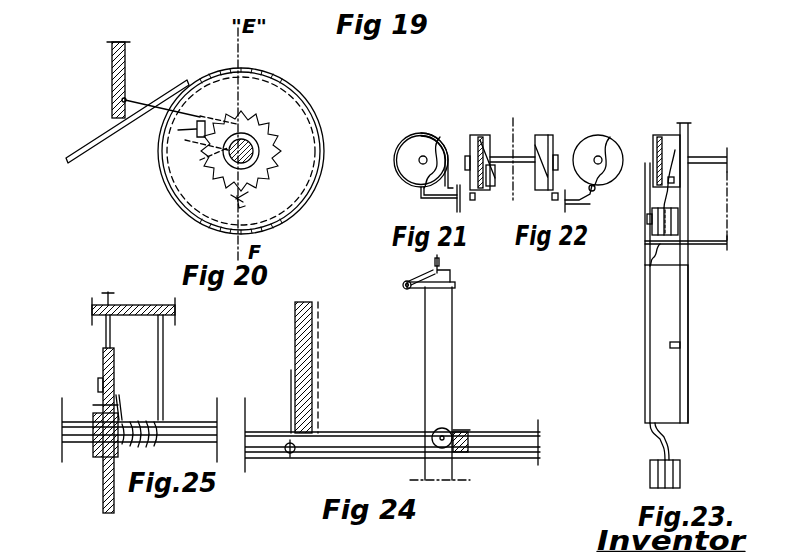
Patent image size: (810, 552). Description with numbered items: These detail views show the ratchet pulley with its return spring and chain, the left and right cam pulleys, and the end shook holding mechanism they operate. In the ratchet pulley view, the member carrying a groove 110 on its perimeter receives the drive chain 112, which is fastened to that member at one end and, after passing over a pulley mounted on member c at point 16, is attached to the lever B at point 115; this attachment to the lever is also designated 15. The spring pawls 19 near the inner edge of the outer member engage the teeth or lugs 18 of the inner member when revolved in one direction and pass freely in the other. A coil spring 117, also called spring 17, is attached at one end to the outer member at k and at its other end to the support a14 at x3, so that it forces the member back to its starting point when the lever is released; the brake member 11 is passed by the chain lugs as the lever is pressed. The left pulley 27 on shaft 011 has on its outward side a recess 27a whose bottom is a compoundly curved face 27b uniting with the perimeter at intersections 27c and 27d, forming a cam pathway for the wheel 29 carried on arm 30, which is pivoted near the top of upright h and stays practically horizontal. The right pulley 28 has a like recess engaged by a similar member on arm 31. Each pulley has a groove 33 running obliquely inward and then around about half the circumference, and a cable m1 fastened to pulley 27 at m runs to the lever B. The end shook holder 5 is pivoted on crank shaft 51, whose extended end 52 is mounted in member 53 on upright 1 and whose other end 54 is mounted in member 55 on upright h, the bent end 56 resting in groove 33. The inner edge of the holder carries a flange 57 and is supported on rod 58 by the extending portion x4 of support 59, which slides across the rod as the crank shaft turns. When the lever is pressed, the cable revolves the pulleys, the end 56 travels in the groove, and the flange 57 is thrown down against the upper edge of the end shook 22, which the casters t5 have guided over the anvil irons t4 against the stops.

In FIG. 20, the attachment point of drive chain to lever B 15 is at (320, 116).
In FIG. 20, the mounting point of pulley on member c 16 is at (250, 128).
In FIG. 25, the mounting point of pulley on member c 16 is at (114, 360).
In FIG. 20, the coil spring 17 is at (262, 162).
In FIG. 25, the coil spring 17 is at (95, 410).
In FIG. 20, the spring pawls 19 is at (196, 132).
In FIG. 25, the spring pawls 19 is at (98, 383).
In FIG. 20, the brake member 11 is at (205, 156).
In FIG. 20, the spring attachment point on member j6 k is at (210, 167).
In FIG. 25, the spring attachment point on member j6 k is at (119, 400).
In FIG. 20, the support a14 is at (112, 75).
In FIG. 25, the support a14 is at (142, 307).
In FIG. 20, the spring attachment point on support x3 is at (120, 100).
In FIG. 25, the spring attachment point on support x3 is at (110, 335).
In FIG. 20, the coil spring 117 is at (143, 104).
In FIG. 25, the coil spring 117 is at (163, 348).
In FIG. 20, the drive chain 112 is at (95, 152).
In FIG. 25, the drive chain 112 is at (105, 338).
In FIG. 20, the attachment point of drive chain to lever B 115 is at (210, 232).
In FIG. 21, the cable attachment point on pulley m is at (394, 161).
In FIG. 21, the shaft 011 is at (420, 158).
In FIG. 22, the shaft 011 is at (515, 155).
In FIG. 23, the shaft 011 is at (690, 157).
In FIG. 21, the recess 27a is at (445, 150).
In FIG. 21, the compoundly curved face 27b is at (426, 142).
In FIG. 21, the intersection 27c is at (440, 146).
In FIG. 21, the intersection 27d is at (414, 190).
In FIG. 21, the wheel 29 is at (414, 196).
In FIG. 22, the wheel 29 is at (478, 192).
In FIG. 21, the arm 30 is at (428, 205).
In FIG. 23, the arm 30 is at (647, 175).
In FIG. 22, the cable m1 is at (479, 140).
In FIG. 23, the cable m1 is at (662, 136).
In FIG. 22, the groove 33 is at (484, 150).
In FIG. 23, the groove 33 is at (683, 136).
In FIG. 22, the left pulley 27 is at (486, 178).
In FIG. 23, the left pulley 27 is at (657, 138).
In FIG. 22, the right pulley 28 is at (545, 182).
In FIG. 22, the arm 31 is at (590, 196).
In FIG. 23, the bent end of crank shaft 56 is at (676, 180).
In FIG. 24, the bent end of crank shaft 56 is at (441, 259).
In FIG. 23, the upright h is at (674, 220).
In FIG. 23, the crank shaft mounting member 55 is at (647, 222).
In FIG. 23, the crank shaft end 54 is at (650, 254).
In FIG. 23, the rod 58 is at (682, 288).
In FIG. 23, the support 59 is at (681, 344).
In FIG. 23, the extending portion x4 is at (681, 348).
In FIG. 23, the end shook holder 5 is at (645, 344).
In FIG. 24, the end shook holder 5 is at (415, 276).
In FIG. 23, the flange 57 is at (690, 411).
In FIG. 24, the flange 57 is at (458, 290).
In FIG. 23, the crank shaft 51 is at (650, 431).
In FIG. 24, the crank shaft 51 is at (405, 289).
In FIG. 23, the extended end of crank shaft 52 is at (660, 456).
In FIG. 23, the crank shaft mounting member 53 is at (650, 481).
In FIG. 23, the upright 1 is at (683, 479).
In FIG. 24, the upright 1 is at (440, 362).
In FIG. 24, the end shook 22 is at (318, 343).
In FIG. 24, the casters t5 is at (436, 432).
In FIG. 24, the anvil irons t4 is at (466, 431).
In FIG. 25, the groove of ratchet pulley member 110 is at (103, 352).
In FIG. 25, the teeth or lugs 18 is at (100, 391).